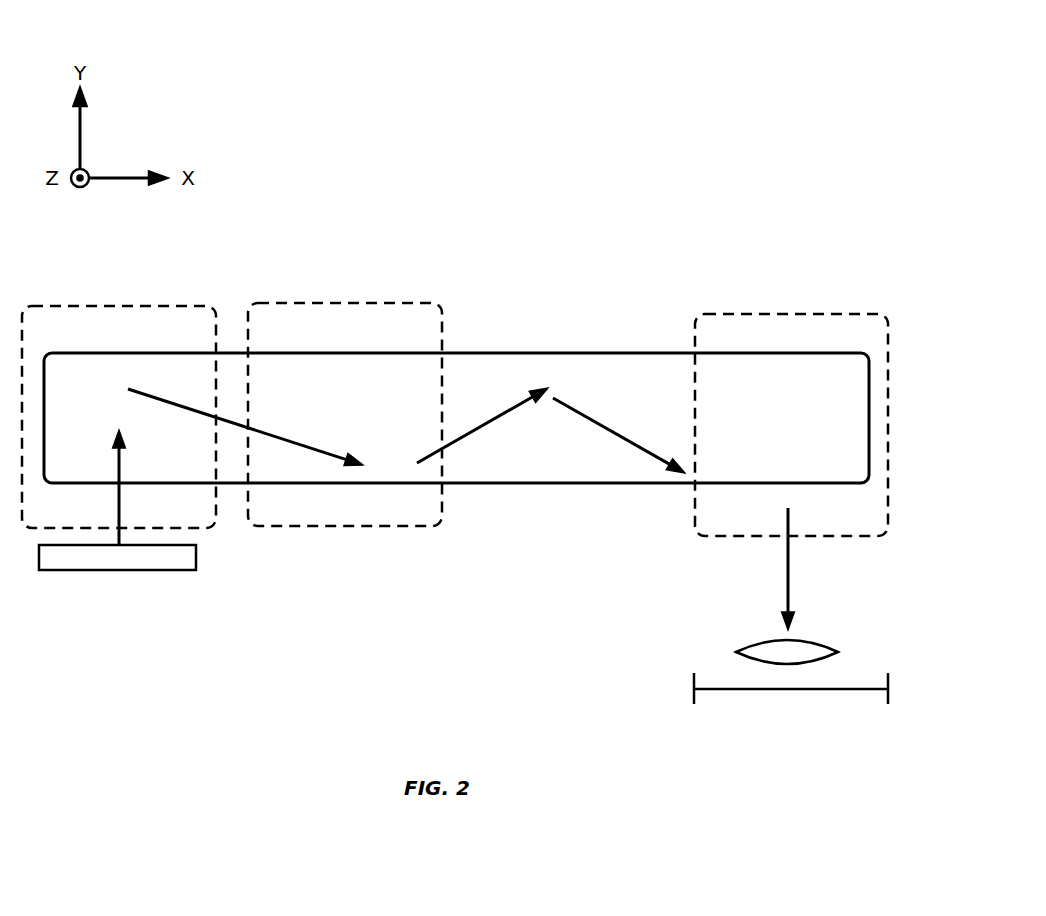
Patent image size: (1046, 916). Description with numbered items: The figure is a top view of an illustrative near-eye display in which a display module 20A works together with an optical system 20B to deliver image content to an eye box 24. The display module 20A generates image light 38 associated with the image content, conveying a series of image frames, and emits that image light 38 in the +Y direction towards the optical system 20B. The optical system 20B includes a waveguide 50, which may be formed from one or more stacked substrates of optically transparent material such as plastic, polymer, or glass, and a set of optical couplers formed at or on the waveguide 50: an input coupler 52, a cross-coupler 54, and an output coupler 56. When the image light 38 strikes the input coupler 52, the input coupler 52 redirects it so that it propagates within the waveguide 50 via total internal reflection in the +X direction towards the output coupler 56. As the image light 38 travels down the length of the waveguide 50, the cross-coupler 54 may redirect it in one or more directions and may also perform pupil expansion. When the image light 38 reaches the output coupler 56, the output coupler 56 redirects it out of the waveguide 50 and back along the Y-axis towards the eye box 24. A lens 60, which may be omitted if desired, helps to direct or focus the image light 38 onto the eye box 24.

The optical system 20B is at (663, 97).
The display module 20A is at (197, 558).
The waveguide 50 is at (562, 351).
The input coupler 52 is at (137, 305).
The cross-coupler 54 is at (341, 301).
The output coupler 56 is at (808, 312).
The image light 38 is at (188, 410).
The lens 60 is at (838, 652).
The eye box 24 is at (795, 690).